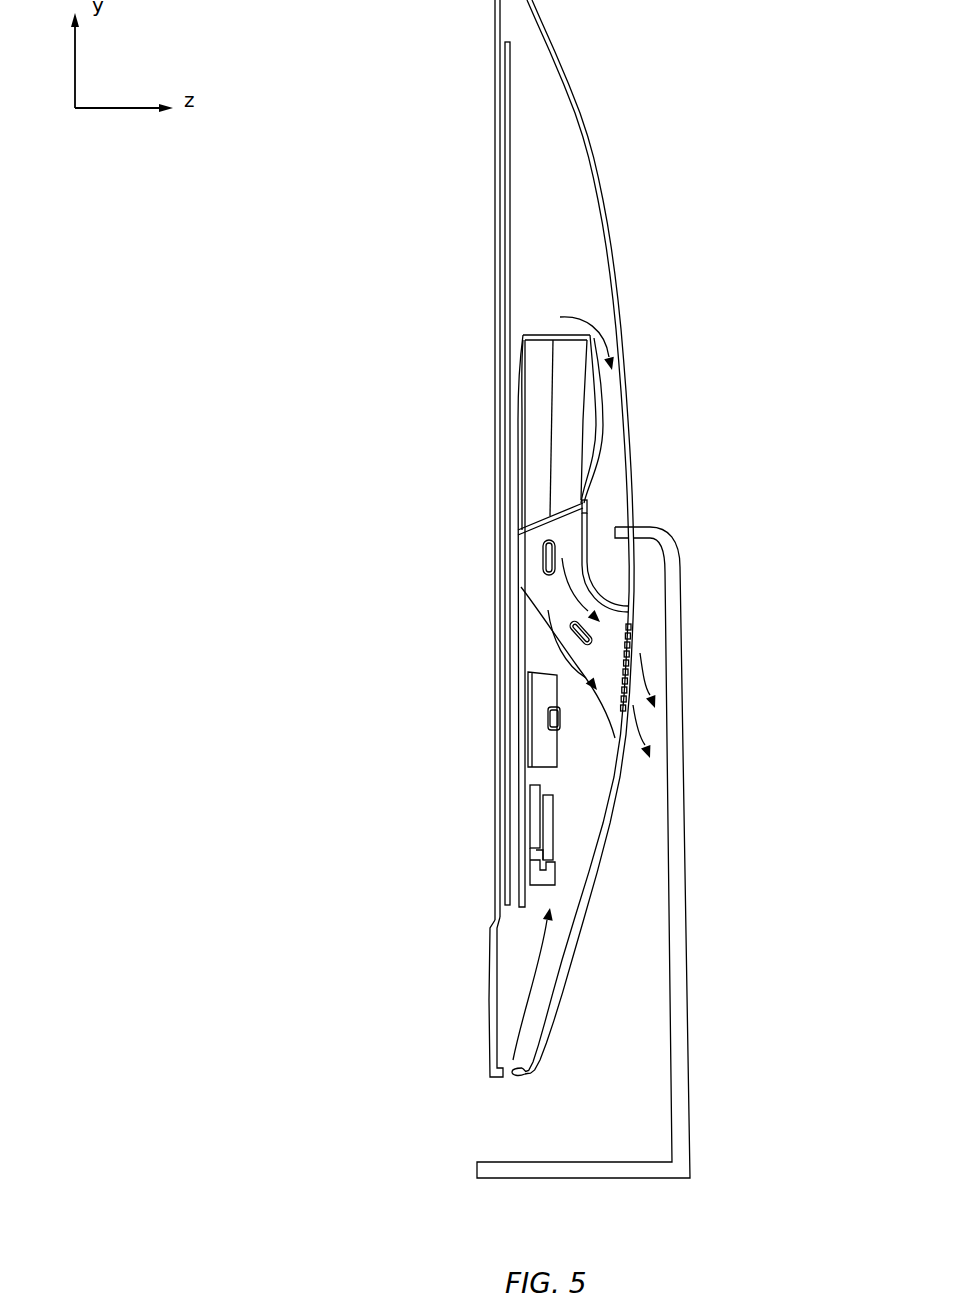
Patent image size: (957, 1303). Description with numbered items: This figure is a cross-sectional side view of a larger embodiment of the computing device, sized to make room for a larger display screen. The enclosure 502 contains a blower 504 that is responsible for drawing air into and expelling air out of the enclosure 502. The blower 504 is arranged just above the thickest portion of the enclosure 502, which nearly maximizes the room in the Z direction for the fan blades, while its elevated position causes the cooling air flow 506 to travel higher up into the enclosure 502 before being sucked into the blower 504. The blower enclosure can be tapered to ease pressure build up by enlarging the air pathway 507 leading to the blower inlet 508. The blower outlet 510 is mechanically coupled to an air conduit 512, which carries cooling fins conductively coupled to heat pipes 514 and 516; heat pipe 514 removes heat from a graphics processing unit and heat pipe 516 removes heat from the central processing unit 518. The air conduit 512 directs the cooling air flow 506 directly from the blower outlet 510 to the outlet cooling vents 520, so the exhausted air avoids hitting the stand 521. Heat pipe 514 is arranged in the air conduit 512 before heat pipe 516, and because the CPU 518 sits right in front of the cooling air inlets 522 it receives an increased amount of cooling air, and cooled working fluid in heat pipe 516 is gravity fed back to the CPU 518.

The enclosure 502 is at (580, 113).
The blower 504 is at (523, 338).
The cooling air flow 506 is at (500, 1091).
The air pathway 507 is at (612, 333).
The blower inlet 508 is at (603, 397).
The blower outlet 510 is at (590, 508).
The air conduit 512 is at (518, 562).
The heat pipe 514 is at (543, 562).
The heat pipe 516 is at (570, 636).
The central processing unit 518 is at (535, 707).
The outlet cooling vents 520 is at (633, 636).
The stand 521 is at (680, 767).
The cooling air inlets 522 is at (513, 1071).